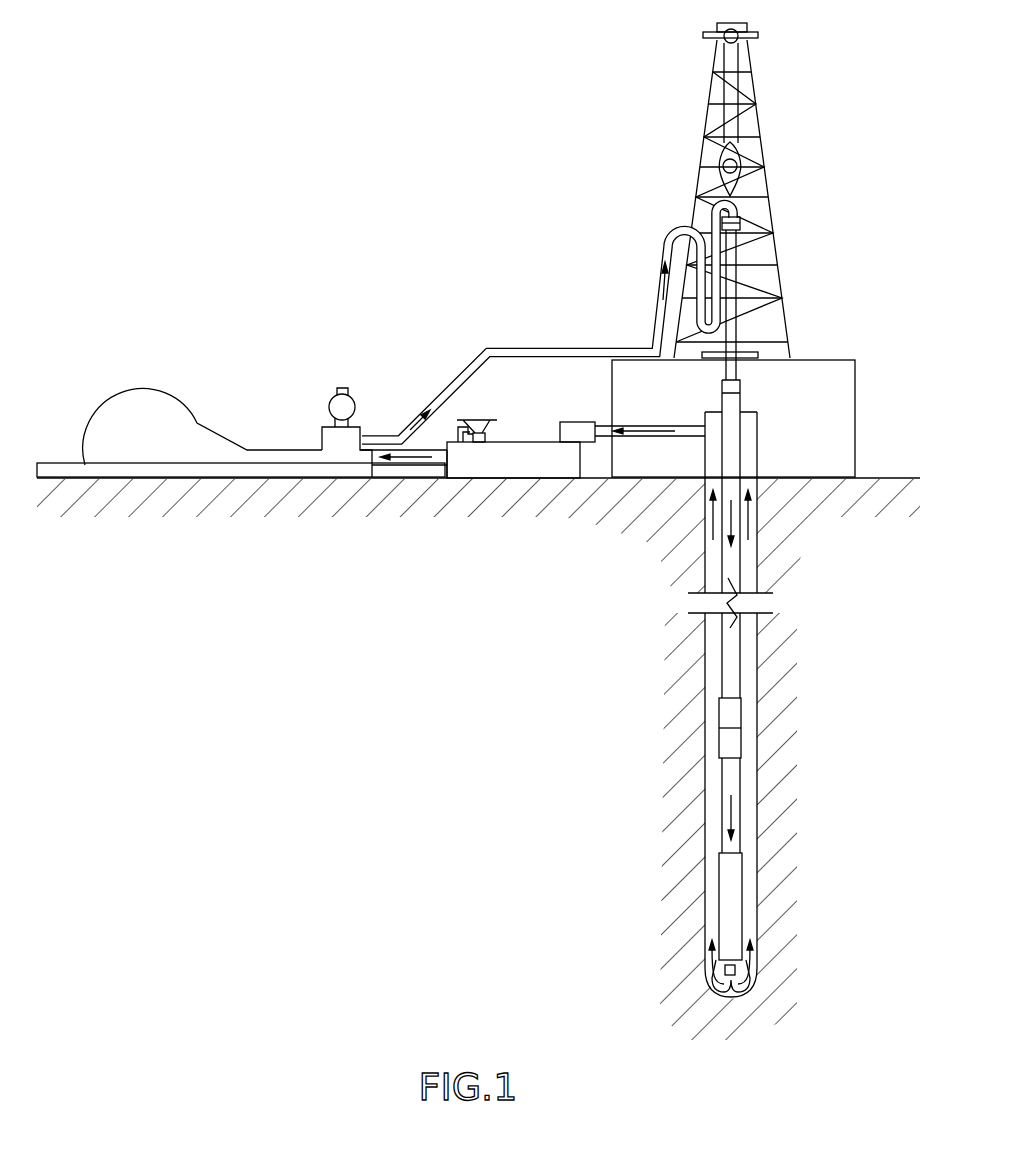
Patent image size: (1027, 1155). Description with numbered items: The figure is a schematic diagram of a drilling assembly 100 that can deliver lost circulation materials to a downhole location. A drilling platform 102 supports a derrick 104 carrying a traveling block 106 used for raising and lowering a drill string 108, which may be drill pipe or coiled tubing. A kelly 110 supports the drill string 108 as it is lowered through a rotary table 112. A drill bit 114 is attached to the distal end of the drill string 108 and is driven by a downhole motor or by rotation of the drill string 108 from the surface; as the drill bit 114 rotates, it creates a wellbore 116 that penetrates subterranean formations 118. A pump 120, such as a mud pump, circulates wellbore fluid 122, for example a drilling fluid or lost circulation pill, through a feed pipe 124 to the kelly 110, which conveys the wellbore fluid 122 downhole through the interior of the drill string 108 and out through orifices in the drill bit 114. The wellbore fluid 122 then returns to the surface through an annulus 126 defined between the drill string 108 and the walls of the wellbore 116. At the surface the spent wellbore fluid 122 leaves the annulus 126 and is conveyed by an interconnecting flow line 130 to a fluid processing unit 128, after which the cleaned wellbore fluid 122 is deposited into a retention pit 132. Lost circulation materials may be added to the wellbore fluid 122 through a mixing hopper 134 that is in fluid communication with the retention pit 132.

The drilling assembly 100 is at (442, 97).
The drilling platform 102 is at (857, 368).
The derrick 104 is at (757, 116).
The traveling block 106 is at (742, 152).
The drill string 108 is at (733, 576).
The kelly 110 is at (738, 276).
The rotary table 112 is at (758, 355).
The drill bit 114 is at (745, 978).
The wellbore 116 is at (757, 660).
The subterranean formations 118 is at (590, 705).
The pump 120 is at (122, 449).
The wellbore fluid 122 is at (382, 440).
The feed pipe 124 is at (496, 346).
The annulus 126 is at (747, 810).
The fluid processing unit 128 is at (577, 422).
The interconnecting flow line 130 is at (686, 436).
The retention pit 132 is at (562, 470).
The mixing hopper 134 is at (467, 433).